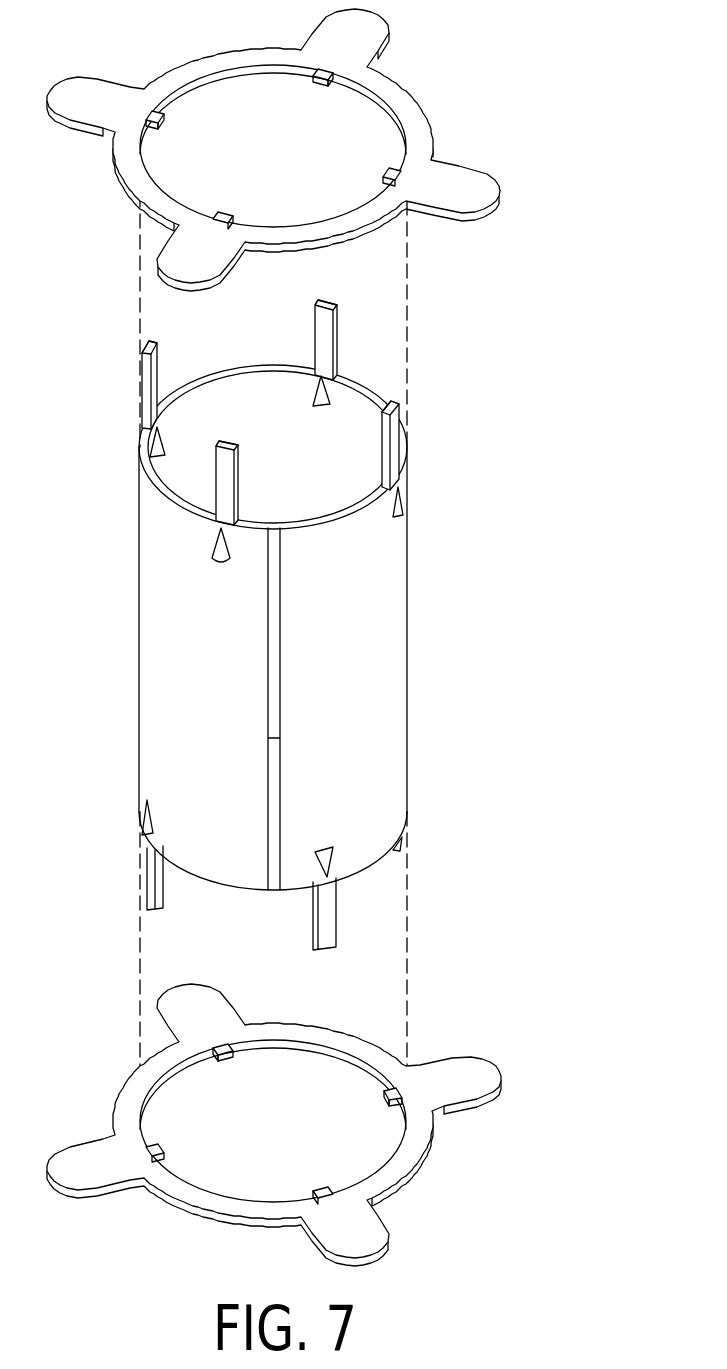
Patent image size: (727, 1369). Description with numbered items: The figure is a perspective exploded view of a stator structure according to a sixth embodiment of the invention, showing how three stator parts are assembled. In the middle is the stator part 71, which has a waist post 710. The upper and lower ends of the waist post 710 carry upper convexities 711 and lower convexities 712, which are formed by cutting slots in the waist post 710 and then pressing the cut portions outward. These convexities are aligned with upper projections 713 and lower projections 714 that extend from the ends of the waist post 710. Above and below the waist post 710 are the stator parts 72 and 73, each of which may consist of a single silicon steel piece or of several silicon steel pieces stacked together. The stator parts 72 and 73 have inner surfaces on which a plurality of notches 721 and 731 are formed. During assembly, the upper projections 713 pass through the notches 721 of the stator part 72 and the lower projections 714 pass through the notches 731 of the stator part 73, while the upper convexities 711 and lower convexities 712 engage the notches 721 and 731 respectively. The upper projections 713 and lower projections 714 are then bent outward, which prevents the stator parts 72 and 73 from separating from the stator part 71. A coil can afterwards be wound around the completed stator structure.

The stator part 71 is at (328, 629).
The waist post 710 is at (395, 705).
The upper convexities 711 is at (405, 518).
The lower convexities 712 is at (333, 863).
The upper projections 713 is at (405, 450).
The lower projections 714 is at (313, 923).
The stator part 72 is at (296, 145).
The notches 721 is at (333, 64).
The stator part 73 is at (312, 1113).
The notches 731 is at (404, 1068).